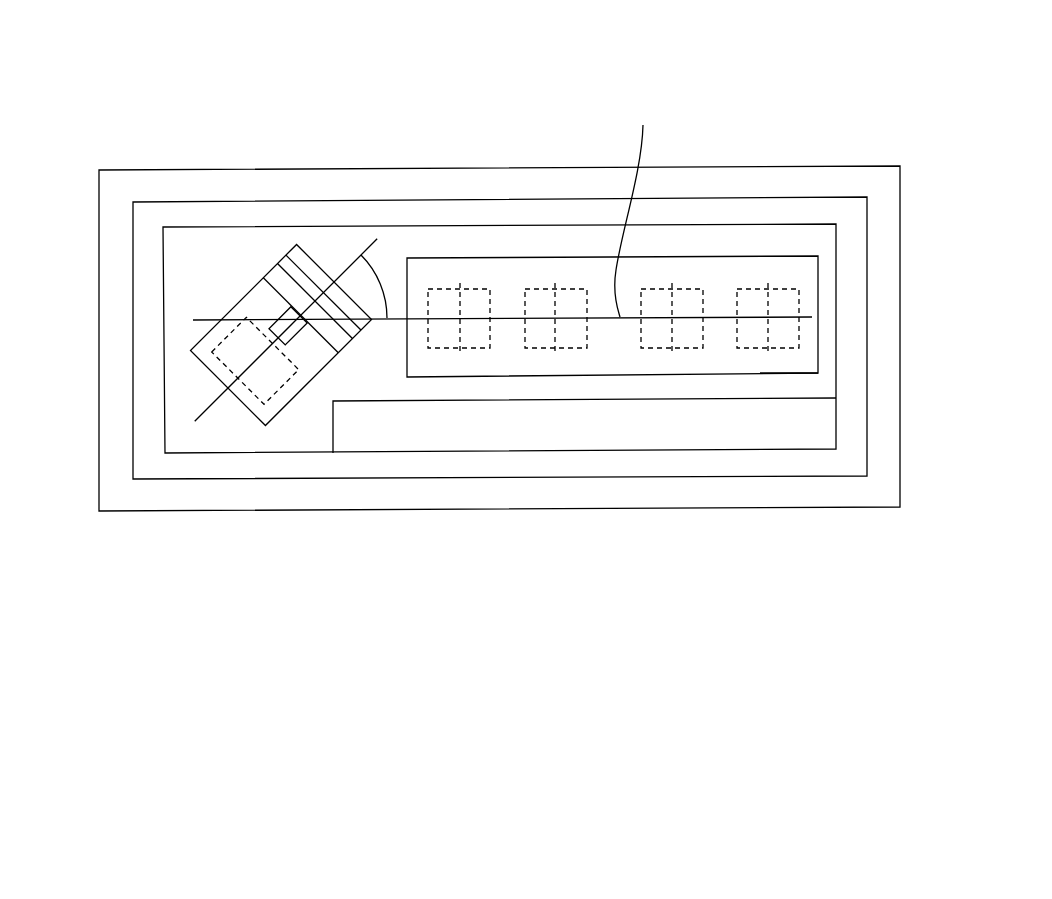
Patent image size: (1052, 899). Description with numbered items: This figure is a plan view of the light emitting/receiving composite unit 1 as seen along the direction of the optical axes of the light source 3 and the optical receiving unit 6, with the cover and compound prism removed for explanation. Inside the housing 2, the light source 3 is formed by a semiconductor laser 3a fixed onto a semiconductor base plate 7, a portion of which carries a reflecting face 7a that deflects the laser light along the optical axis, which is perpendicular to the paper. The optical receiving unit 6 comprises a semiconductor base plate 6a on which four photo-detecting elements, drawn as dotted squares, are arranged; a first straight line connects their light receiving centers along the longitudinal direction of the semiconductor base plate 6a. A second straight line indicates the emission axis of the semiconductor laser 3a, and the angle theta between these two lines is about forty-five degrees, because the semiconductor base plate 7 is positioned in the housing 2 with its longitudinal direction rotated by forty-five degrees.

The light emitting/receiving composite unit 1 is at (85, 103).
The housing 2 is at (548, 165).
The light source 3 is at (176, 390).
The semiconductor laser 3a is at (288, 326).
The optical receiving unit 6 is at (782, 235).
The semiconductor base plate 6a is at (808, 362).
The semiconductor base plate 7 is at (285, 386).
The reflecting face 7a is at (312, 304).